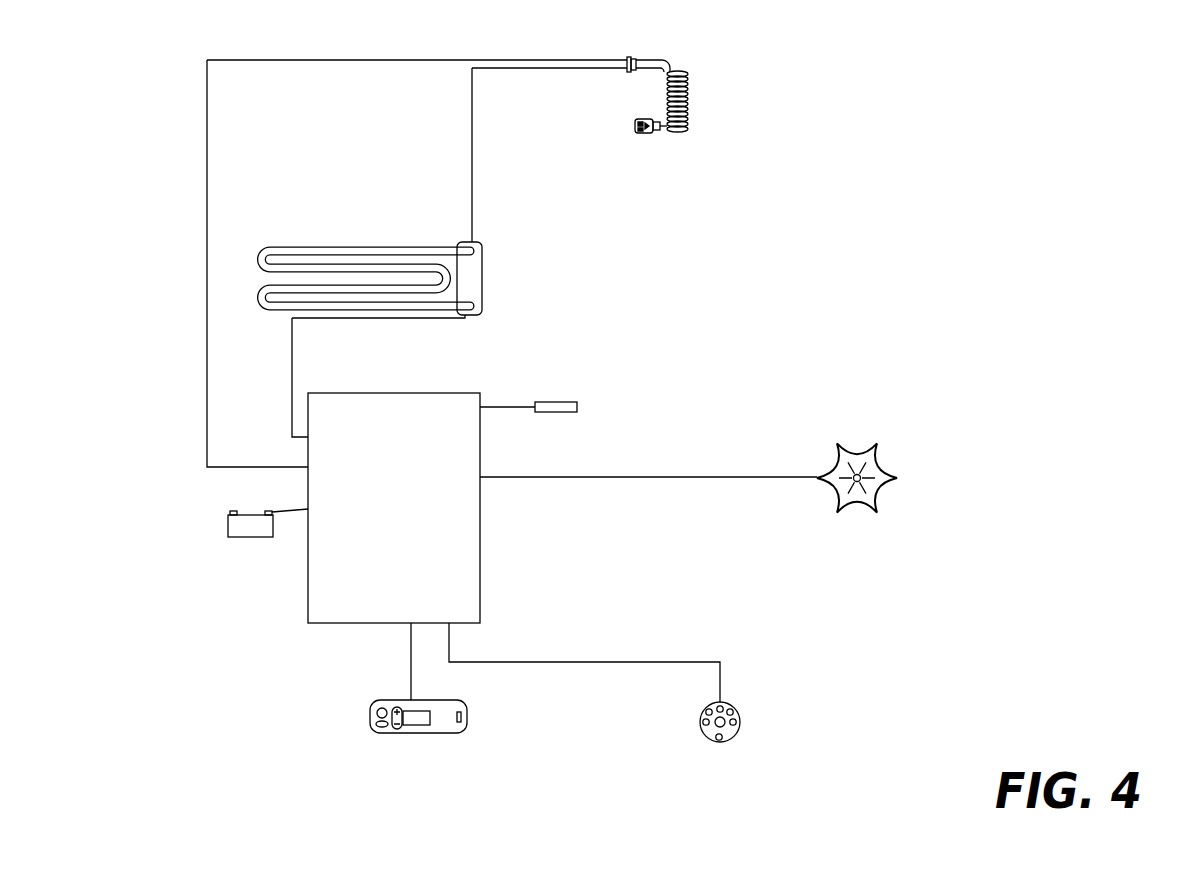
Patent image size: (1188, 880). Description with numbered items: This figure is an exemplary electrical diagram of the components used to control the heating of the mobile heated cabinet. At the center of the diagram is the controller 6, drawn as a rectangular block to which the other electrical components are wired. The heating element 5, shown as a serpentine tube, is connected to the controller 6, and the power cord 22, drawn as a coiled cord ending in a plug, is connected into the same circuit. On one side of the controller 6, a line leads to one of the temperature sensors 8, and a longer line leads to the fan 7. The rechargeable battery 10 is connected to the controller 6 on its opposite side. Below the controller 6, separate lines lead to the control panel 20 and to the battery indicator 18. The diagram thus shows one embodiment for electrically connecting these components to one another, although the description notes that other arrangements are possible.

The heating element 5 is at (483, 270).
The controller 6 is at (466, 592).
The fan 7 is at (885, 468).
The temperature sensor 8 is at (577, 407).
The rechargeable battery 10 is at (228, 526).
The battery indicator 18 is at (741, 721).
The control panel 20 is at (370, 712).
The power cord 22 is at (690, 93).